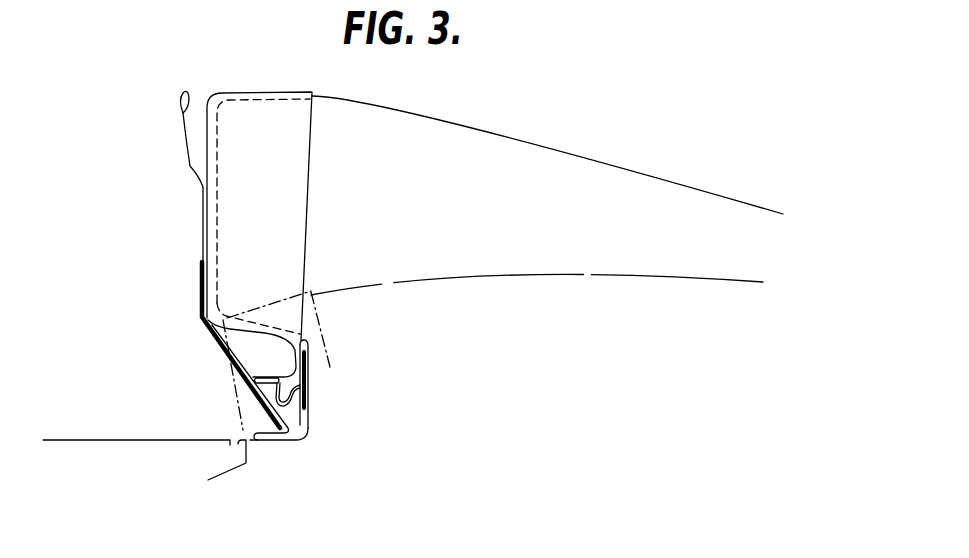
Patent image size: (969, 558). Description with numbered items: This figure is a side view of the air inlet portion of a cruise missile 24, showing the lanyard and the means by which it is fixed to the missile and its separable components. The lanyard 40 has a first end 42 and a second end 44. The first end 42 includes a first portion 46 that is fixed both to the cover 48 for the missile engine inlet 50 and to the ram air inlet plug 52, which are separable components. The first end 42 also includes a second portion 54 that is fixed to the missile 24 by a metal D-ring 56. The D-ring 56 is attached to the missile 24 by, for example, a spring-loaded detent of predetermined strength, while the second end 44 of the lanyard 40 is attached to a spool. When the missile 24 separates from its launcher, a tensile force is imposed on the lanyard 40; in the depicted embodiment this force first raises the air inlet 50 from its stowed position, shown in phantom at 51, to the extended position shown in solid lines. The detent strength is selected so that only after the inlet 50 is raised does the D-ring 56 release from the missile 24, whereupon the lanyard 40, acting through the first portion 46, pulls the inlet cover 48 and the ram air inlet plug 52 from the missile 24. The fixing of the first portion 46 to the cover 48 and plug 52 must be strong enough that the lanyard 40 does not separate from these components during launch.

The missile 24 is at (90, 437).
The lanyard 40 is at (190, 166).
The first end 42 is at (212, 363).
The second end 44 is at (180, 100).
The first portion 46 is at (264, 377).
The cover 48 is at (270, 92).
The missile engine inlet 50 is at (386, 104).
The stowed position 51 is at (465, 274).
The ram air inlet plug 52 is at (306, 389).
The second portion 54 is at (257, 392).
The metal D-ring 56 is at (287, 443).